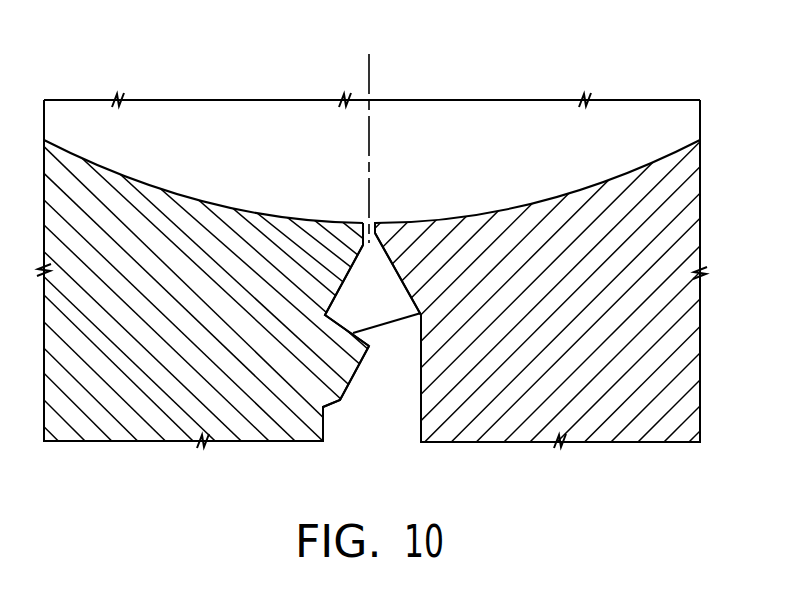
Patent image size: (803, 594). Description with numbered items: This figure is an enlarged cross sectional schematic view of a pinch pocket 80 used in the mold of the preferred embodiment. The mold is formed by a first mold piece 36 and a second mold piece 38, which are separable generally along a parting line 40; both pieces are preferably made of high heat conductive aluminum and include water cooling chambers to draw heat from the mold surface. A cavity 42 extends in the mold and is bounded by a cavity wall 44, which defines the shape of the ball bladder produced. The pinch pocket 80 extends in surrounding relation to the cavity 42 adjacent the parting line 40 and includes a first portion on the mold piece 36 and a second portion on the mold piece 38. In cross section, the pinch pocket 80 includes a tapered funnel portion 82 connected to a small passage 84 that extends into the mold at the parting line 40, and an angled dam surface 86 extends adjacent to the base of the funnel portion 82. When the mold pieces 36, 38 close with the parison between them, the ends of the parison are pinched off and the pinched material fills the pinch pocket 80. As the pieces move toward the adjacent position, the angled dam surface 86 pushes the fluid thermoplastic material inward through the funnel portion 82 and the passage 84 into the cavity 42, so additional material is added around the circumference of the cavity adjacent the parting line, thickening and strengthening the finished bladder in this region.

The first mold piece 36 is at (587, 423).
The second mold piece 38 is at (313, 270).
The parting line 40 is at (372, 158).
The cavity 42 is at (227, 136).
The cavity wall 44 is at (116, 171).
The pinch pocket 80 is at (400, 430).
The tapered funnel portion 82 is at (382, 278).
The small passage 84 is at (377, 232).
The angled dam surface 86 is at (421, 313).